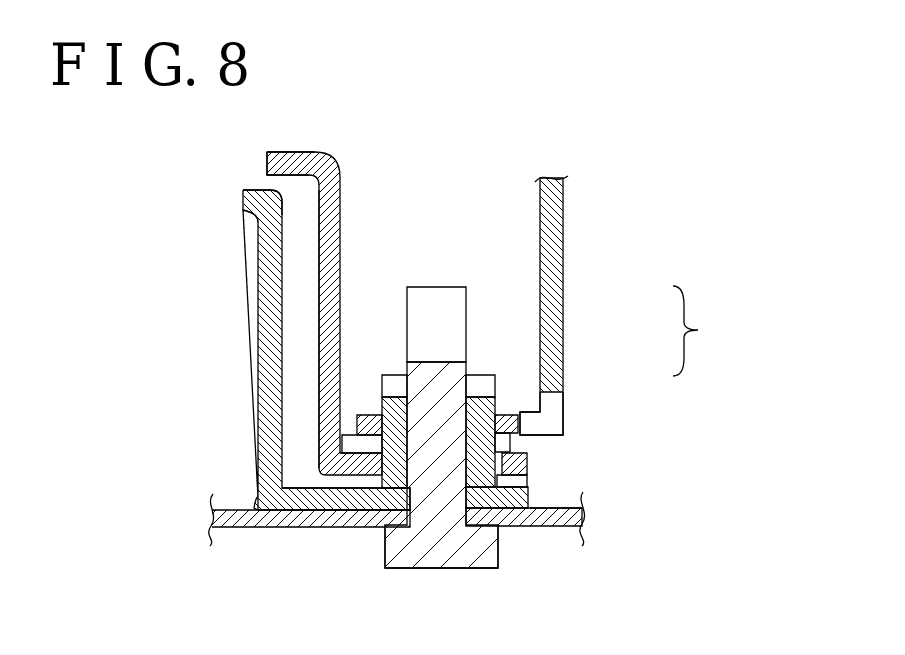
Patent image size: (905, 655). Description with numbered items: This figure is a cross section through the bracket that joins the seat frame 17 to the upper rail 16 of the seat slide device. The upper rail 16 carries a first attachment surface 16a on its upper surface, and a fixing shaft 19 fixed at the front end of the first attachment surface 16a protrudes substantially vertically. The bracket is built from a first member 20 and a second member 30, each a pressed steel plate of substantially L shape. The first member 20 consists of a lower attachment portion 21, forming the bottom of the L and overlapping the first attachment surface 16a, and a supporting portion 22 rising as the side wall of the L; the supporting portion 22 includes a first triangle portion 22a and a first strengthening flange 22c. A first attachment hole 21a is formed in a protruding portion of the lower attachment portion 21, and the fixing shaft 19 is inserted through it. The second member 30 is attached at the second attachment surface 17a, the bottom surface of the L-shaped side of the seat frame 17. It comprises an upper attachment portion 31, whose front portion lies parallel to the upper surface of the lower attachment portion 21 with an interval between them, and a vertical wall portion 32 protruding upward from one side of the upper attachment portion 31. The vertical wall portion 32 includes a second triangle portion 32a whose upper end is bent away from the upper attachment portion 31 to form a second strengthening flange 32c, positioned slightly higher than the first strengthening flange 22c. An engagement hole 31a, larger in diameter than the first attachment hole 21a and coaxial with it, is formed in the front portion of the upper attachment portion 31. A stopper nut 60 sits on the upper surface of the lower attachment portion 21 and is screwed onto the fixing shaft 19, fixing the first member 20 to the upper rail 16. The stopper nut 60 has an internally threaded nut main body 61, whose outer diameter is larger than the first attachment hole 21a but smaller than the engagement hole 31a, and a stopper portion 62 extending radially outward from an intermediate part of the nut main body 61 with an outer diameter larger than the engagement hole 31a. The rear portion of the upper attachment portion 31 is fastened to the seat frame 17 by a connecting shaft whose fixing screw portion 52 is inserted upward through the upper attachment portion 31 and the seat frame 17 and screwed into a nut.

The upper rail 16 is at (567, 526).
The first attachment surface 16a is at (553, 507).
The seat frame 17 is at (562, 228).
The second attachment surface 17a is at (535, 440).
The fixing shaft 19 is at (475, 374).
The first member 20 is at (237, 527).
The lower attachment portion 21 is at (365, 482).
The first attachment hole 21a is at (412, 500).
The supporting portion 22 is at (272, 388).
The first triangle portion 22a is at (270, 425).
The first strengthening flange 22c is at (242, 206).
The second member 30 is at (328, 475).
The upper attachment portion 31 is at (352, 482).
The engagement hole 31a is at (480, 500).
The vertical wall portion 32 is at (318, 262).
The second triangle portion 32a is at (320, 314).
The second strengthening flange 32c is at (265, 162).
The fixing screw portion 52 is at (452, 308).
The stopper nut 60 is at (705, 331).
The nut main body 61 is at (500, 382).
The stopper portion 62 is at (510, 415).